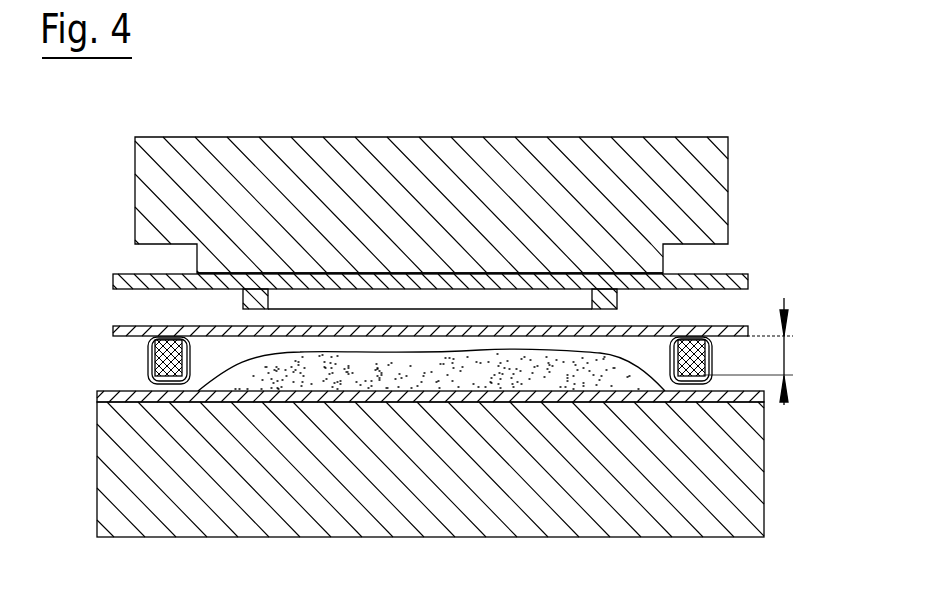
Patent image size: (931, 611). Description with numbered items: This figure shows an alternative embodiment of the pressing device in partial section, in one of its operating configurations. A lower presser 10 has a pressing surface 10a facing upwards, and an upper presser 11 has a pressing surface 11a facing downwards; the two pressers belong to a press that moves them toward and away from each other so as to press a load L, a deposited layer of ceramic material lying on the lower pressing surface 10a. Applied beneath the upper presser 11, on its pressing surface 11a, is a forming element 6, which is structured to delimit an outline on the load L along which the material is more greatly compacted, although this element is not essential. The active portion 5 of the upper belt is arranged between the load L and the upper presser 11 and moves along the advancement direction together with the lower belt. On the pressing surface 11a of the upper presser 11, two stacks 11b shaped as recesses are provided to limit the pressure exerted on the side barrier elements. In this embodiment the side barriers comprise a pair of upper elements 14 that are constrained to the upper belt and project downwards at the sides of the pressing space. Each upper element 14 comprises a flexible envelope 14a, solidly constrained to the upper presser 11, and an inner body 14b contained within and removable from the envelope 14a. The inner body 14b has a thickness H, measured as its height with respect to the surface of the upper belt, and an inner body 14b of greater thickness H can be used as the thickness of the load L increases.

The upper presser 11 is at (424, 195).
The pressing surface 11a is at (242, 273).
The stacks 11b is at (160, 245).
The forming element 6 is at (603, 302).
The active portion 5 is at (133, 328).
The upper elements 14 is at (117, 349).
The envelope 14a is at (147, 354).
The inner body 14b is at (150, 378).
The lower presser 10 is at (547, 467).
The pressing surface 10a is at (398, 398).
The load L is at (458, 385).
The thickness H is at (756, 351).